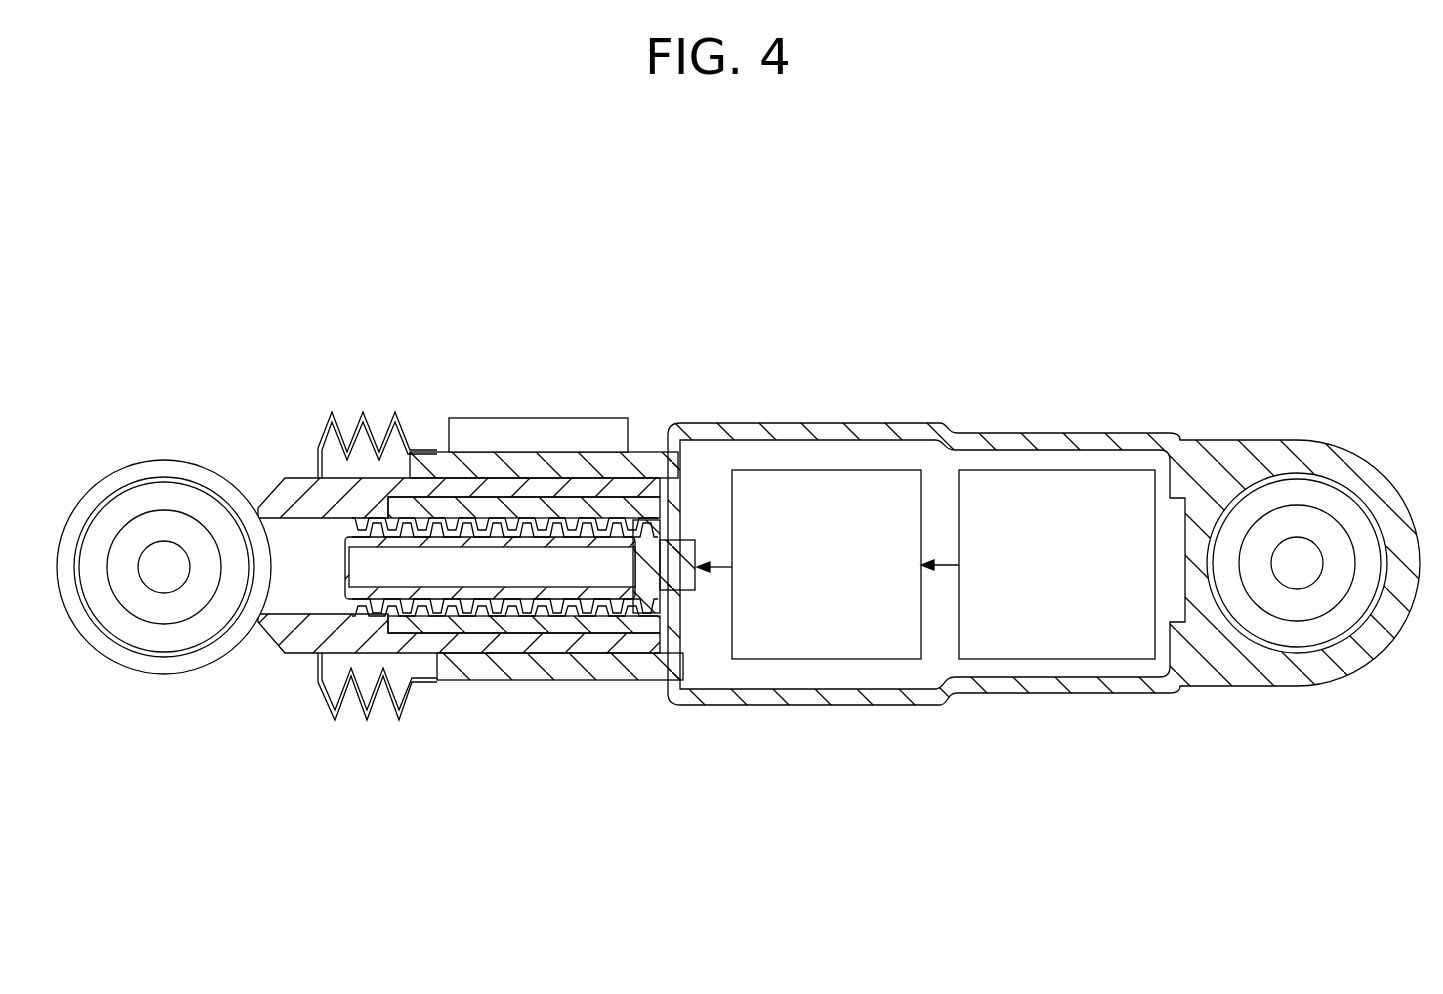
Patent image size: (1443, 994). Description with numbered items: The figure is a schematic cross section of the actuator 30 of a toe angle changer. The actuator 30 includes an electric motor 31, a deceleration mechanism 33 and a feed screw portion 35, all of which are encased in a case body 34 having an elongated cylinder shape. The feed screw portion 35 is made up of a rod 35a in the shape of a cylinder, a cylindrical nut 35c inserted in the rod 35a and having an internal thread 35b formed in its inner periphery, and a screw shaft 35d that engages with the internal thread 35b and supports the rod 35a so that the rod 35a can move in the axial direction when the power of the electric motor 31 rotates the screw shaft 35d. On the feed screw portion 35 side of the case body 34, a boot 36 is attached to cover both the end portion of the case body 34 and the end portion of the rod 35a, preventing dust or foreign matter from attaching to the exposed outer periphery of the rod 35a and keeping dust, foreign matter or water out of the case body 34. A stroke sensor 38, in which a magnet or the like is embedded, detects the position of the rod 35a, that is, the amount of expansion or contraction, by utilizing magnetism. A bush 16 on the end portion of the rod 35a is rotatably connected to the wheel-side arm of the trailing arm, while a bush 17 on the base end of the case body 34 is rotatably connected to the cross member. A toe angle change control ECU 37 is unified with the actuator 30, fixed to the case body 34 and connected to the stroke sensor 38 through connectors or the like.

The bush 16 is at (132, 475).
The bush 17 is at (1333, 468).
The actuator 30 is at (1081, 268).
The electric motor 31 is at (1098, 470).
The deceleration mechanism 33 is at (845, 470).
The case body 34 is at (507, 668).
The feed screw portion 35 is at (552, 660).
The rod 35a is at (302, 645).
The internal thread 35b is at (415, 607).
The nut 35c is at (465, 628).
The screw shaft 35d is at (608, 594).
The boot 36 is at (362, 412).
The toe angle change control ECU 37 is at (575, 418).
The stroke sensor 38 is at (513, 458).